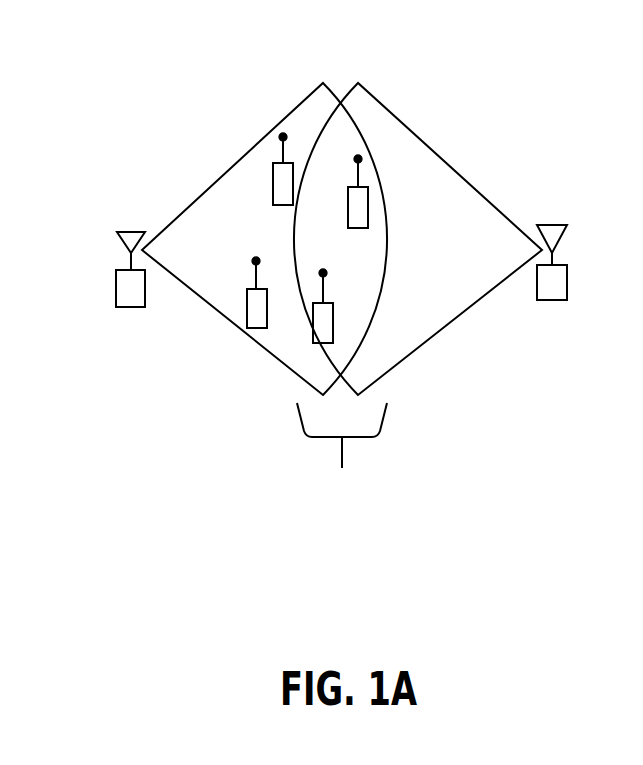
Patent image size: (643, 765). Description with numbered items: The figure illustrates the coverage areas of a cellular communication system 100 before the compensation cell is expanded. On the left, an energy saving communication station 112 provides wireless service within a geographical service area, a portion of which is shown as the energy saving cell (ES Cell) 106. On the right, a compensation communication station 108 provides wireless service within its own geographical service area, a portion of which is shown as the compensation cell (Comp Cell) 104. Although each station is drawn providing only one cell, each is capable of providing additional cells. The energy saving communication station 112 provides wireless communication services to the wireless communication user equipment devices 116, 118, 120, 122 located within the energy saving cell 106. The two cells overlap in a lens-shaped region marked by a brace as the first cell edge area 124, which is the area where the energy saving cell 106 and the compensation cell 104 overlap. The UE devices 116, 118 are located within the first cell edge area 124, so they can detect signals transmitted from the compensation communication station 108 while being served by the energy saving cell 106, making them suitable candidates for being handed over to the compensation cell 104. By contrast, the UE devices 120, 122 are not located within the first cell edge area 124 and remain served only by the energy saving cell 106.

The cellular communication system 100 is at (163, 430).
The compensation cell 104 is at (437, 147).
The energy saving cell 106 is at (200, 178).
The compensation communication station 108 is at (543, 215).
The energy saving communication station 112 is at (132, 227).
The wireless communication user equipment device 116 is at (358, 142).
The wireless communication user equipment device 118 is at (340, 327).
The wireless communication user equipment device 120 is at (273, 155).
The wireless communication user equipment device 122 is at (233, 300).
The first cell edge area 124 is at (342, 500).